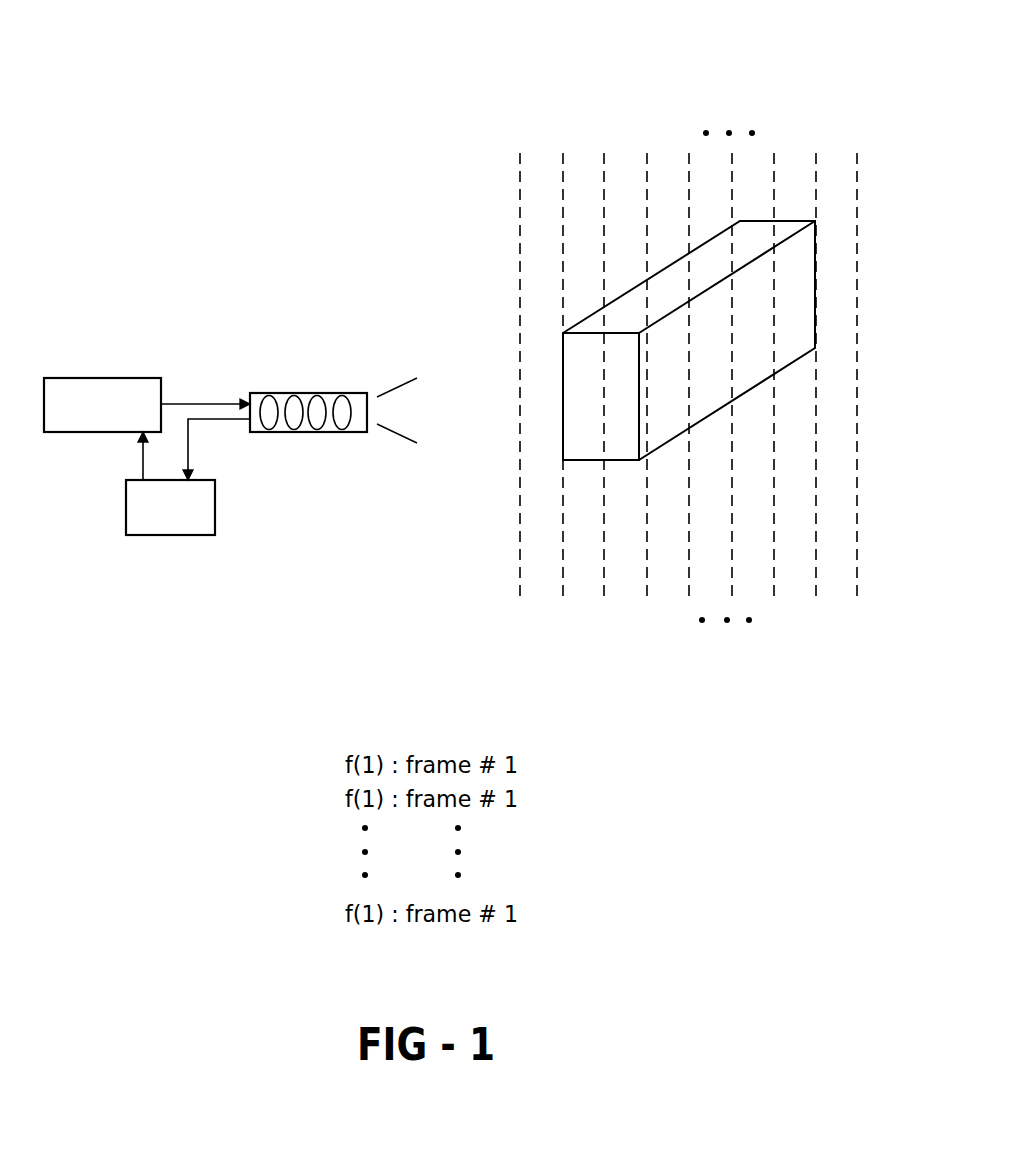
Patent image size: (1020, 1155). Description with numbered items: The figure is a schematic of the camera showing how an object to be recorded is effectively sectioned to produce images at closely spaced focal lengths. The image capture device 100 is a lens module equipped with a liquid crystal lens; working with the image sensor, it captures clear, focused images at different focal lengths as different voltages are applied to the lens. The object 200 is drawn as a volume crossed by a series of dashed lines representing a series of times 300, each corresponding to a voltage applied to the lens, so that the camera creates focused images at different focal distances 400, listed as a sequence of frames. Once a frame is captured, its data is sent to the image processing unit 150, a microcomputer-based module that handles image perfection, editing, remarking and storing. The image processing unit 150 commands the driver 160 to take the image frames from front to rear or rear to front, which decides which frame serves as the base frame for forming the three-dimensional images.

The image capture device 100 is at (287, 393).
The image processing unit (IPU) 150 is at (214, 508).
The driver 160 is at (93, 378).
The object / imaged volume 200 is at (795, 303).
The series of times 300 is at (558, 108).
The focused images at different focal distances 400 is at (623, 633).